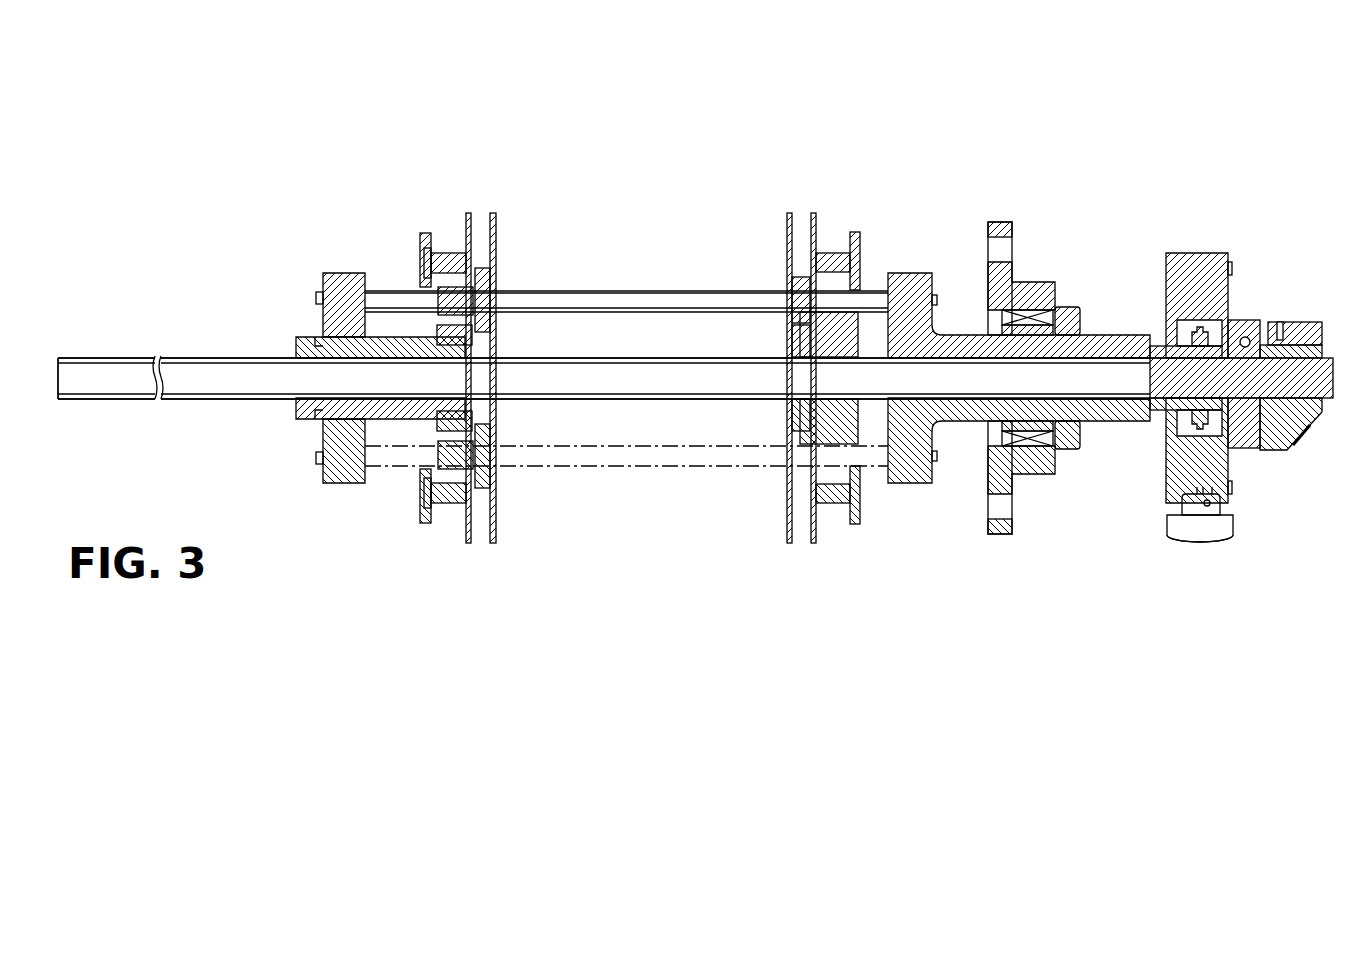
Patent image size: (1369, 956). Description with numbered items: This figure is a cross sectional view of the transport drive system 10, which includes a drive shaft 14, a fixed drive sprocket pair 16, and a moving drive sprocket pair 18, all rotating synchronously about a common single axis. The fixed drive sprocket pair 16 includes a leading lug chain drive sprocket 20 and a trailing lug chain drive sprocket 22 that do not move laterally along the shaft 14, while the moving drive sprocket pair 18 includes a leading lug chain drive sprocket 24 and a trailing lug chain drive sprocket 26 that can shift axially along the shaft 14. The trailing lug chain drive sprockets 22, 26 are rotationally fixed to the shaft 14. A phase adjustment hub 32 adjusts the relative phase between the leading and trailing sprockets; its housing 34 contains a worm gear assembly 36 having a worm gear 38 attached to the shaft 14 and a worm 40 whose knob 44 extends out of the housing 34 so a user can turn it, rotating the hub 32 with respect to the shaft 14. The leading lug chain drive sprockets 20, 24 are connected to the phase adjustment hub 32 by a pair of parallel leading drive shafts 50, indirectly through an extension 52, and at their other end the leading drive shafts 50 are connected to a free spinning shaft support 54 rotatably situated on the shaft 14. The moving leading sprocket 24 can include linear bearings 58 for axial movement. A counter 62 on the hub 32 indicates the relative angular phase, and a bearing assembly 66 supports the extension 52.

The transport drive system 10 is at (283, 182).
The drive shaft 14 is at (210, 357).
The fixed drive sprocket pair 16 is at (801, 559).
The moving drive sprocket pair 18 is at (441, 559).
The leading lug chain drive sprocket 20 is at (789, 212).
The trailing lug chain drive sprocket 22 is at (813, 212).
The leading lug chain drive sprocket 24 is at (493, 212).
The trailing lug chain drive sprocket 26 is at (468, 212).
The phase adjustment hub 32 is at (1199, 190).
The housing 34 is at (1190, 253).
The worm gear assembly 36 is at (1213, 327).
The worm gear 38 is at (1172, 338).
The worm 40 is at (1222, 420).
The knob 44 is at (1195, 545).
The leading drive shafts 50 is at (652, 290).
The extension 52 is at (1115, 420).
The shaft support 54 is at (322, 475).
The linear bearings 58 is at (497, 290).
The counter 62 is at (1310, 427).
The bearing assembly 66 is at (1032, 282).